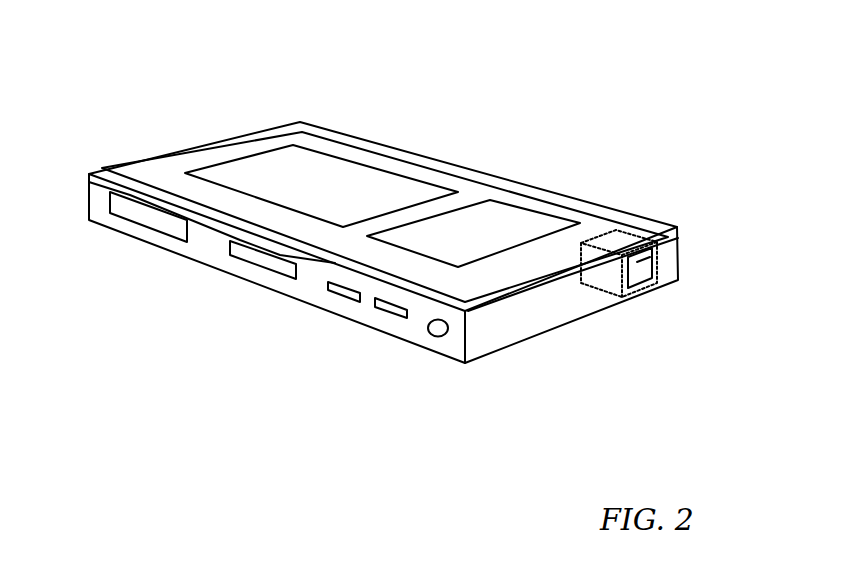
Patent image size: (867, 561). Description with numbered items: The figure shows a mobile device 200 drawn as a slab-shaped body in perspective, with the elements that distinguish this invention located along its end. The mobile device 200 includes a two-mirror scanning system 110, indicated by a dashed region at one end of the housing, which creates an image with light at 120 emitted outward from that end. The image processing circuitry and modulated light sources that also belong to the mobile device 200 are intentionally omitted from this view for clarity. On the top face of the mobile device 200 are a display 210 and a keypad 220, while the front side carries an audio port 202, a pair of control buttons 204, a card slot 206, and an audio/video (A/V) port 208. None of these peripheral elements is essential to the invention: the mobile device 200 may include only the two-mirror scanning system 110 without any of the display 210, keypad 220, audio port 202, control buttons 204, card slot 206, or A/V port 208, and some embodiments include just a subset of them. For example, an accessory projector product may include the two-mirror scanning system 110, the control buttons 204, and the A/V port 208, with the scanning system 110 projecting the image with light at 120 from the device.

The mobile device 200 is at (700, 78).
The keypad 220 is at (332, 170).
The display 210 is at (485, 212).
The audio/video (A/V) port 208 is at (132, 212).
The card slot 206 is at (254, 260).
The control buttons 204 is at (384, 312).
The audio port 202 is at (437, 338).
The two-mirror scanning system 110 is at (618, 233).
The light creating an image 120 is at (635, 275).